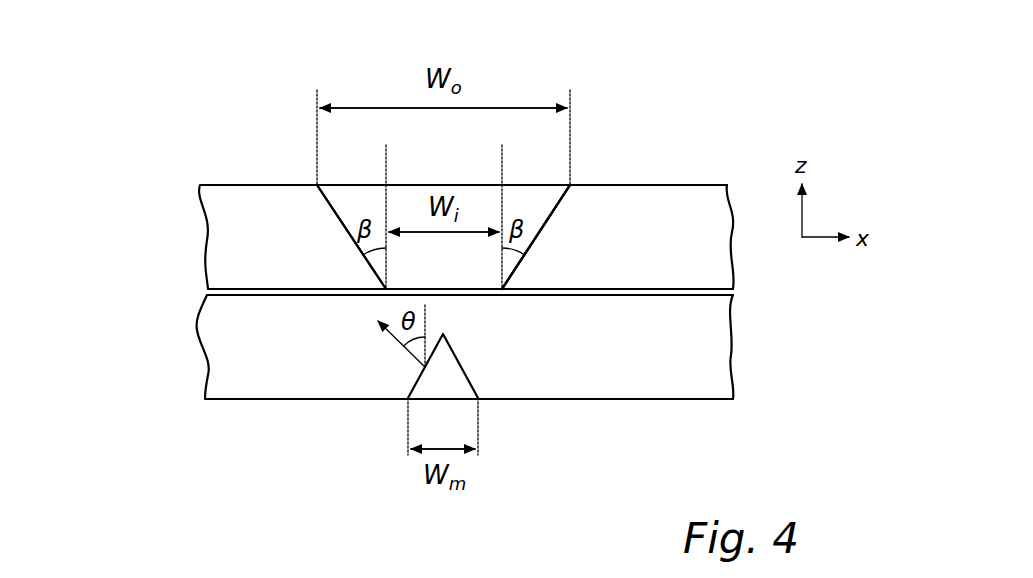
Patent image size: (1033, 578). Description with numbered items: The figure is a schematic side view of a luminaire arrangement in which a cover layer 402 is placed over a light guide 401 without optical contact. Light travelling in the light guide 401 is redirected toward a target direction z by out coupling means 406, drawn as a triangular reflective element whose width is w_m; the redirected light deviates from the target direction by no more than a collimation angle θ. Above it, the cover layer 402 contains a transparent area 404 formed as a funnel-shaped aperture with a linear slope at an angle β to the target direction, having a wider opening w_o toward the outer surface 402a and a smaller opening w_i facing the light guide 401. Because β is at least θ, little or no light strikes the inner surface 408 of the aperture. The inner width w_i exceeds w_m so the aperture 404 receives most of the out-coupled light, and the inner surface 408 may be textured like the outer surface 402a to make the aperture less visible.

The light guide 401 is at (590, 378).
The cover layer 402 is at (280, 200).
The outer surface of the cover layer 402a is at (647, 183).
The transparent area 404 is at (468, 165).
The out coupling means 406 is at (448, 406).
The inner surface 408 is at (543, 218).